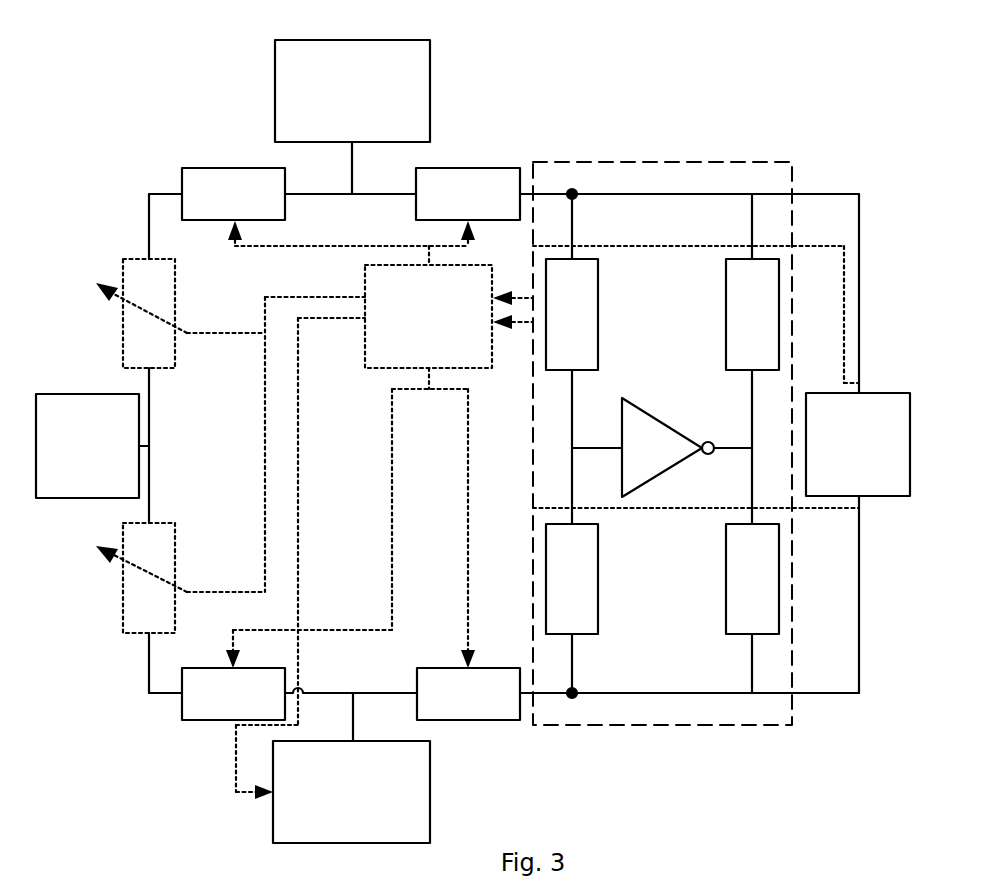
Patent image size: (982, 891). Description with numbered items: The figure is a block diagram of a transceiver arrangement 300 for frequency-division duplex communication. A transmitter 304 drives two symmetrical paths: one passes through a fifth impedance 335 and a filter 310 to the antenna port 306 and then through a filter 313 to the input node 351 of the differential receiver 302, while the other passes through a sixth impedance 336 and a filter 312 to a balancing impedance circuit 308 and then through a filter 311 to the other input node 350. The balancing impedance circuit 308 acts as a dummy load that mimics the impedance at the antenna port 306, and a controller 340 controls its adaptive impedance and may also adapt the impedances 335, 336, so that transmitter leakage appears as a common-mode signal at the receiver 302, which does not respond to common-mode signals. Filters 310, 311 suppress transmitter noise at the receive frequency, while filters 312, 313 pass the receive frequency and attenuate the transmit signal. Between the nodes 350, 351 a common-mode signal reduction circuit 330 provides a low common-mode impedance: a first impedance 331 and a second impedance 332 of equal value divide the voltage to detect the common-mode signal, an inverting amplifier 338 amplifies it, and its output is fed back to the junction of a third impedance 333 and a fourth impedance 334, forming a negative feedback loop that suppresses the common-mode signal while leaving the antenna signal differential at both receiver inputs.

The transceiver arrangement 300 is at (906, 717).
The receiver 302 is at (845, 402).
The transmitter 304 is at (128, 437).
The antenna port 306 is at (300, 91).
The balancing impedance circuit 308 is at (418, 795).
The filter 310 is at (192, 183).
The filter 311 is at (467, 713).
The filter 312 is at (193, 702).
The filter 313 is at (452, 178).
The common-mode signal reduction circuit 330 is at (653, 717).
The first impedance 331 is at (580, 317).
The second impedance 332 is at (585, 602).
The third impedance 333 is at (750, 305).
The fourth impedance 334 is at (750, 578).
The fifth impedance 335 is at (155, 338).
The sixth impedance 336 is at (160, 580).
The inverting amplifier 338 is at (652, 435).
The controller 340 is at (400, 348).
The input node 350 is at (573, 696).
The input node 351 is at (573, 191).